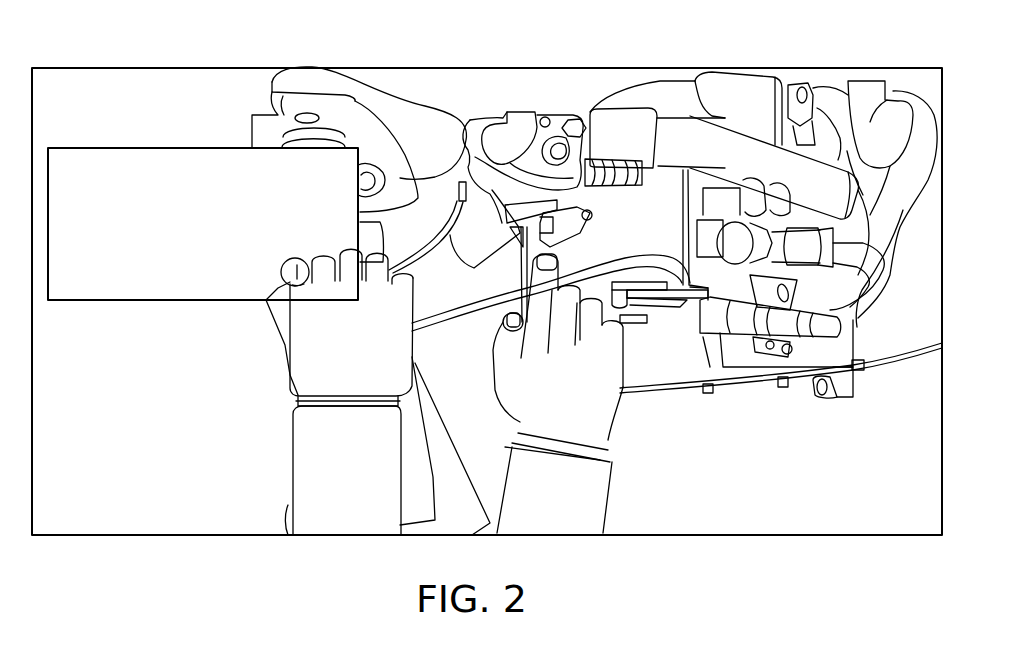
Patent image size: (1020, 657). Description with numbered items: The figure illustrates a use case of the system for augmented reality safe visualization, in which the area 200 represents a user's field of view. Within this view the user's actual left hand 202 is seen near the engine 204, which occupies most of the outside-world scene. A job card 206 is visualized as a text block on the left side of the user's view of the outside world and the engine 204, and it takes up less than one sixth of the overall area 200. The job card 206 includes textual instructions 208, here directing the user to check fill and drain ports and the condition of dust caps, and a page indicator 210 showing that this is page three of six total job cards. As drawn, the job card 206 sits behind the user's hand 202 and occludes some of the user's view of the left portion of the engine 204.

The area 200 is at (73, 68).
The user's left hand 202 is at (292, 355).
The engine 204 is at (525, 105).
The job card 206 is at (88, 148).
The textual instructions 208 is at (137, 148).
The page indicator 210 is at (75, 300).